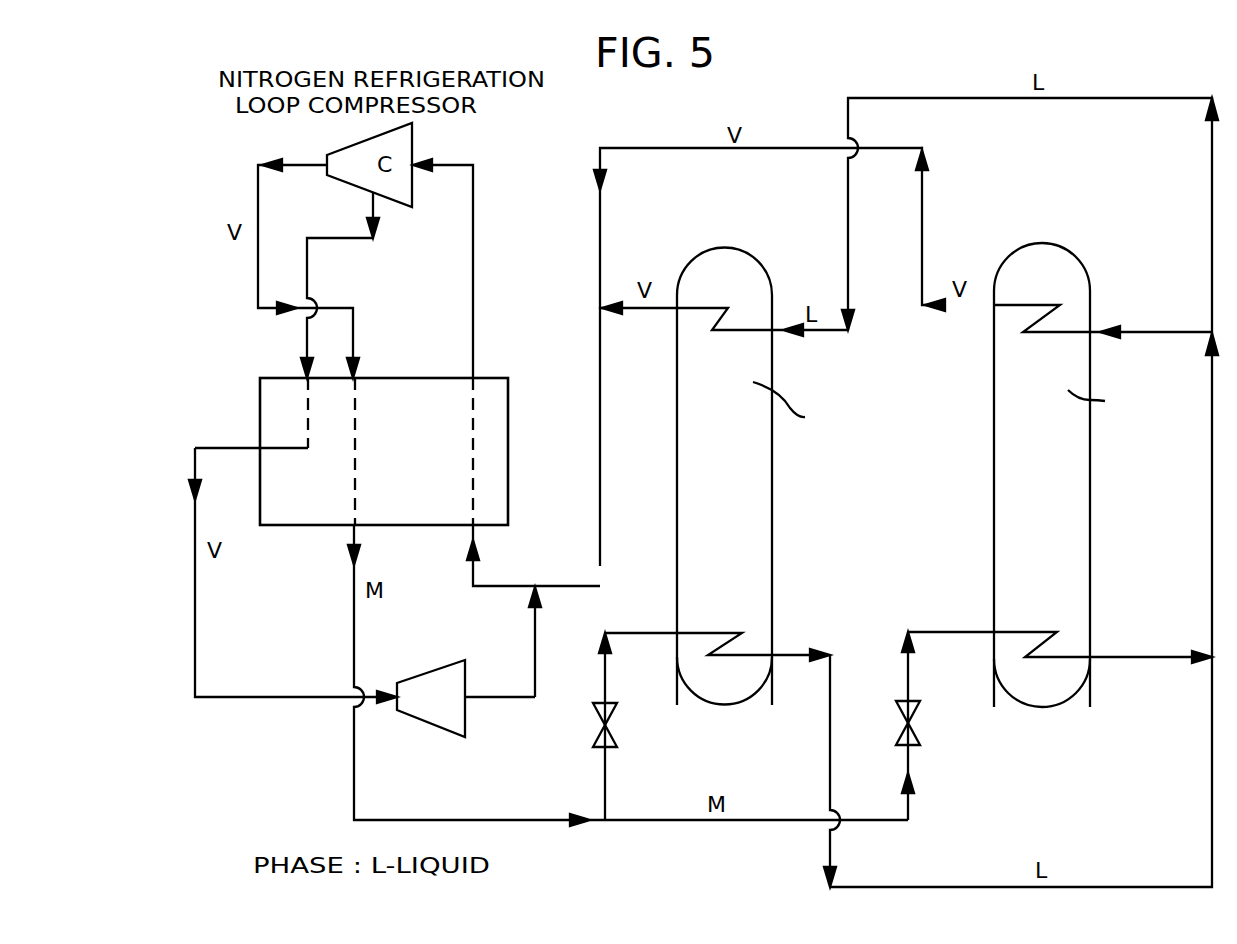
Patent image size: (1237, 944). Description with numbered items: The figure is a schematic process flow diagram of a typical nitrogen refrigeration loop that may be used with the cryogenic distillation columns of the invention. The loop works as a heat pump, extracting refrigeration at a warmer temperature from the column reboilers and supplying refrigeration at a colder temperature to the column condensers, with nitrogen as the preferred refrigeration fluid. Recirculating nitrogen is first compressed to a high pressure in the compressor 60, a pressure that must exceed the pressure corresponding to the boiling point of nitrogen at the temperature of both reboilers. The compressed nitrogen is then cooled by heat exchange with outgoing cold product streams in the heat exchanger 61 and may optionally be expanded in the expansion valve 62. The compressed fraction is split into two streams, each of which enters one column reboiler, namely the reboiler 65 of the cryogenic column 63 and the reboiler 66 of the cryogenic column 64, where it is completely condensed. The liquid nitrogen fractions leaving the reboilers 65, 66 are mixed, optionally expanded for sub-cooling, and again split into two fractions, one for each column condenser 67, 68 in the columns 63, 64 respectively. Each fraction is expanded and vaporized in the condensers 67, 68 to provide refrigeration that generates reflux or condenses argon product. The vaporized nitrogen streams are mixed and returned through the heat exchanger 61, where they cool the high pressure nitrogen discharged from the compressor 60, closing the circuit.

The compressor 60 is at (447, 213).
The heat exchanger 61 is at (508, 463).
The expansion valve 62 is at (446, 664).
The cryogenic column 63 is at (772, 535).
The cryogenic column 64 is at (1090, 525).
The column reboiler 65 is at (737, 700).
The column reboiler 66 is at (1073, 697).
The column condenser 67 is at (738, 248).
The column condenser 68 is at (1065, 250).